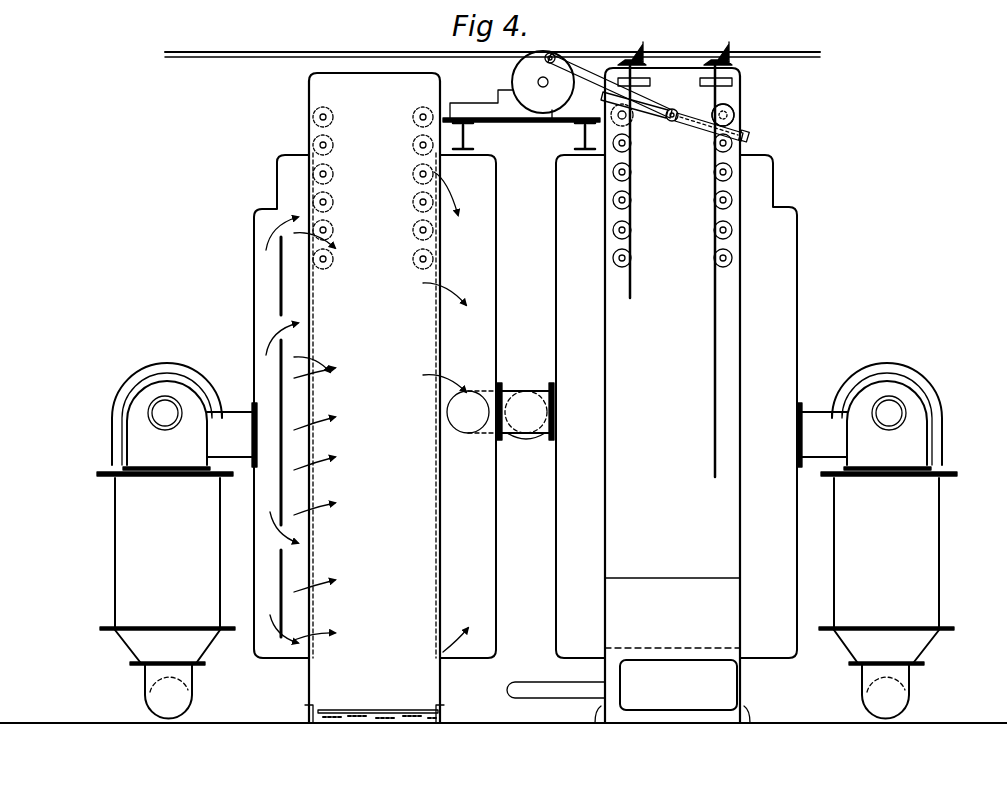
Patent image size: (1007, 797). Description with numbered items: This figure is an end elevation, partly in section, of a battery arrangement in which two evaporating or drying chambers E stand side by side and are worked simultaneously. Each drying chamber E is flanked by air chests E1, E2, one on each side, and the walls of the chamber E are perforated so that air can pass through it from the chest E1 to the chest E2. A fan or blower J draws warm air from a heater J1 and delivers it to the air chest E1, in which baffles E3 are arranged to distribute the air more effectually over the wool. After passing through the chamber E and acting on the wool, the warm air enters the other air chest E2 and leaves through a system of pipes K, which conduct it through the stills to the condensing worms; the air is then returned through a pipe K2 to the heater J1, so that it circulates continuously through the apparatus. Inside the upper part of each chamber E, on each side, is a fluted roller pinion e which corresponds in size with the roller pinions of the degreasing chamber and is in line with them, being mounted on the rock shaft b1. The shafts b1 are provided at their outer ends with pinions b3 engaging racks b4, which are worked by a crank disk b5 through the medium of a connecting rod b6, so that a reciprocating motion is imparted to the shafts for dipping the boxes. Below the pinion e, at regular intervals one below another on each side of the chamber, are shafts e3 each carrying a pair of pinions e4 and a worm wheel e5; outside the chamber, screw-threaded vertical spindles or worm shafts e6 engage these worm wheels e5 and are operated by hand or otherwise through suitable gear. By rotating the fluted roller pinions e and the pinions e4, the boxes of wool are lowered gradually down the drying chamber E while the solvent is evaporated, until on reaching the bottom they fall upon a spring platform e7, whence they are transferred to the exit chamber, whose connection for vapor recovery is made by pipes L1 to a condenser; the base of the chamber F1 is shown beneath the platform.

The evaporating or drying chamber E is at (524, 395).
The air chest E1 is at (509, 406).
The air chest E2 is at (522, 406).
The baffles E3 is at (291, 437).
The fan or blower J is at (527, 419).
The heater J1 is at (527, 571).
The system of pipes K is at (523, 400).
The pipe K2 is at (175, 702).
The pipes L1 is at (507, 690).
The base chamber F1 is at (742, 693).
The rock shafts b1 is at (332, 121).
The pinions b3 is at (735, 120).
The racks b4 is at (603, 96).
The crank disk b5 is at (512, 84).
The connecting rod b6 is at (600, 74).
The fluted roller pinion e is at (323, 117).
The shafts e3 is at (330, 174).
The pinions e4 is at (333, 202).
The worm wheel e5 is at (612, 230).
The screw-threaded vertical spindles or worm shafts e6 is at (632, 294).
The spring platform e7 is at (374, 710).